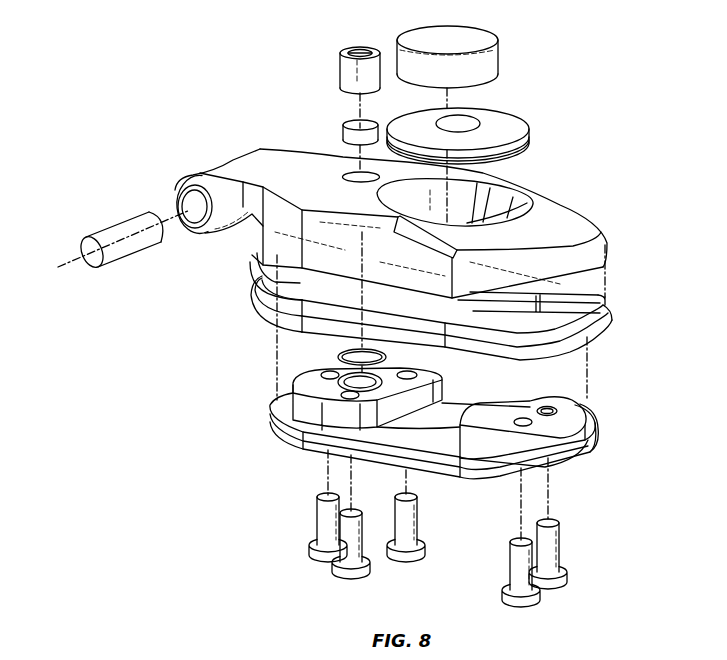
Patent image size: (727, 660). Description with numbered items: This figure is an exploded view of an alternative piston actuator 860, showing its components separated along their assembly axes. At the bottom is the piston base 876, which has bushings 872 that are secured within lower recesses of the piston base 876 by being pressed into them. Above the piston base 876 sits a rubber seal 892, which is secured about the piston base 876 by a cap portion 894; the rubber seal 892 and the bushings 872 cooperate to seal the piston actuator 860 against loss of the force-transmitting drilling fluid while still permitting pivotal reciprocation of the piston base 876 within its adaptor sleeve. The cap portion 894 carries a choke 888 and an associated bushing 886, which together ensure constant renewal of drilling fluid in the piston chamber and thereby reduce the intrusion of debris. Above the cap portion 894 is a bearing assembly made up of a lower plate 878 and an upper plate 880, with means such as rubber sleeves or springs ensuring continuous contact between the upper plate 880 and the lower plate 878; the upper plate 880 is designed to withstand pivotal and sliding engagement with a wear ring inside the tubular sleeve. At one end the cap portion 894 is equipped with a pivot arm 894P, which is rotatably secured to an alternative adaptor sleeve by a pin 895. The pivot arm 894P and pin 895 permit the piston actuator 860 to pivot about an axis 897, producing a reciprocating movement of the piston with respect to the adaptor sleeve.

The piston actuator 860 is at (598, 70).
The bushings 872 is at (412, 525).
The piston base 876 is at (572, 430).
The lower plate 878 is at (505, 117).
The upper plate 880 is at (500, 55).
The bushing 886 is at (340, 72).
The choke 888 is at (343, 133).
The rubber seal 892 is at (607, 317).
The cap portion 894 is at (607, 247).
The pivot arm 894P is at (223, 155).
The pin 895 is at (118, 228).
The axis 897 is at (73, 262).